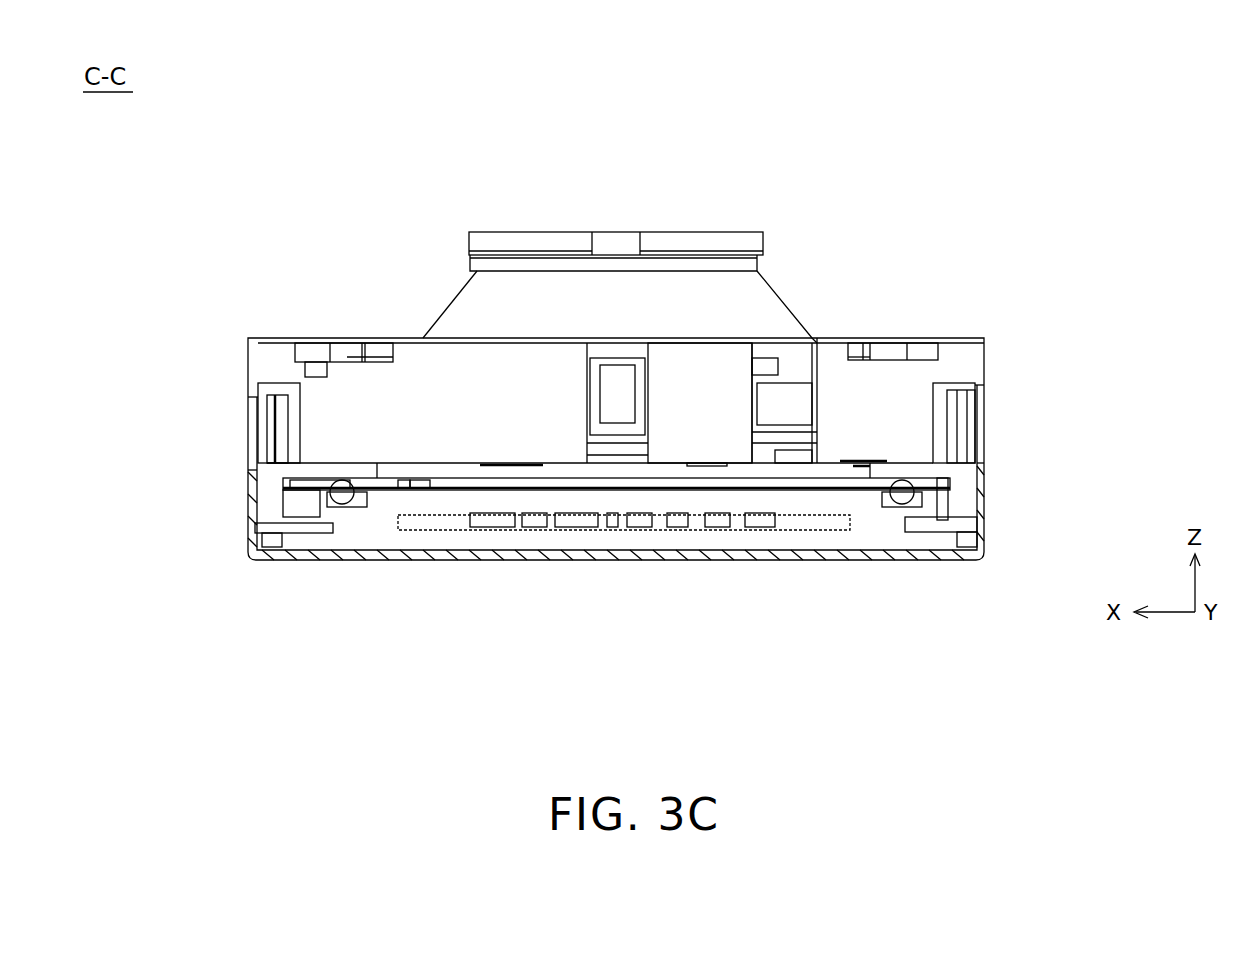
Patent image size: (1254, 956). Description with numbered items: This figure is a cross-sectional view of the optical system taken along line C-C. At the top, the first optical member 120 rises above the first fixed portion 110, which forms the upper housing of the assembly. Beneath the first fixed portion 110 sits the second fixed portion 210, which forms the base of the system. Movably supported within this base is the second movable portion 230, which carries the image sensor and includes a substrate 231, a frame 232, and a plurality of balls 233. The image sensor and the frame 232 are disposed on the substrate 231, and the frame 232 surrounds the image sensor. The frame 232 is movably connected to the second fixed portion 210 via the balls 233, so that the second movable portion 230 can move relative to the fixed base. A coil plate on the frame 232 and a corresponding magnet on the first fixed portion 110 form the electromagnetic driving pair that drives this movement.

The first fixed portion 110 is at (967, 353).
The first optical member 120 is at (698, 303).
The second fixed portion 210 is at (980, 517).
The second movable portion 230 is at (616, 593).
The substrate 231 is at (624, 585).
The frame 232 is at (848, 507).
The balls 233 is at (342, 497).